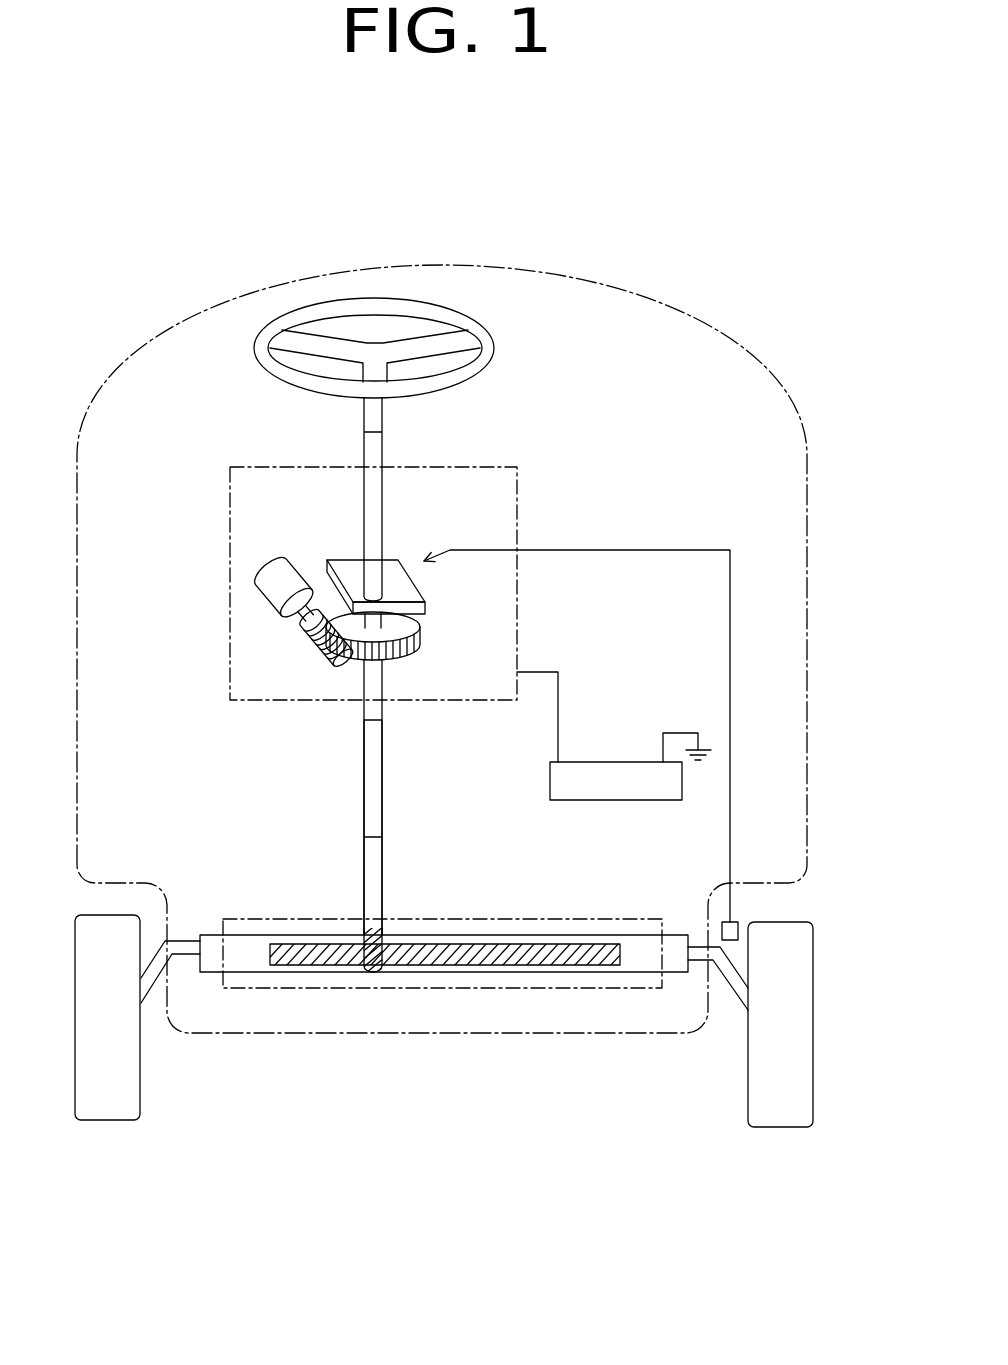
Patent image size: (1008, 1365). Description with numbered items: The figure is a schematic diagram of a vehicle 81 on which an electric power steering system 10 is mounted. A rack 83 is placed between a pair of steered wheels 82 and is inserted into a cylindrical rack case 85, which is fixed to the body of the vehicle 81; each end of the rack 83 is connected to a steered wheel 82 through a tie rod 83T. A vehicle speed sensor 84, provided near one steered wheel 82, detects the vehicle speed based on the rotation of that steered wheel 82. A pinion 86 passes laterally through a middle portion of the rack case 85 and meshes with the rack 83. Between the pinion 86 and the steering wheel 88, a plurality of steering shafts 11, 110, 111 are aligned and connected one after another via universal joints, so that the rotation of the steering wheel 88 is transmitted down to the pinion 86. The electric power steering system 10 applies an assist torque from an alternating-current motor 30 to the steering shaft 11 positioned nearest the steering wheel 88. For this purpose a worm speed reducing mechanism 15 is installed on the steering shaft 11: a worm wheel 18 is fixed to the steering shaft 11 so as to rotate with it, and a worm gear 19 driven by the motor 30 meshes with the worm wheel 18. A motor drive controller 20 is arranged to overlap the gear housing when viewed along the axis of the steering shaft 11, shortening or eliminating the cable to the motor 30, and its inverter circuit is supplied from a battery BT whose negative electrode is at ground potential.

The vehicle 81 is at (675, 301).
The steering wheel 88 is at (495, 340).
The electric power steering system 10 is at (520, 502).
The steering shaft 11 is at (362, 689).
The steering shaft 110 is at (362, 780).
The steering shaft 111 is at (362, 857).
The motor drive controller 20 is at (346, 547).
The alternating-current motor 30 is at (256, 557).
The worm speed reducing mechanism 15 is at (253, 657).
The worm gear 19 is at (300, 630).
The worm wheel 18 is at (363, 636).
The vehicle speed sensor 84 is at (740, 925).
The battery BT is at (618, 801).
The rack case 85 is at (540, 990).
The rack 83 is at (638, 965).
The pinion 86 is at (372, 968).
The tie rod 83T is at (150, 985).
The steered wheel 82 is at (107, 1110).